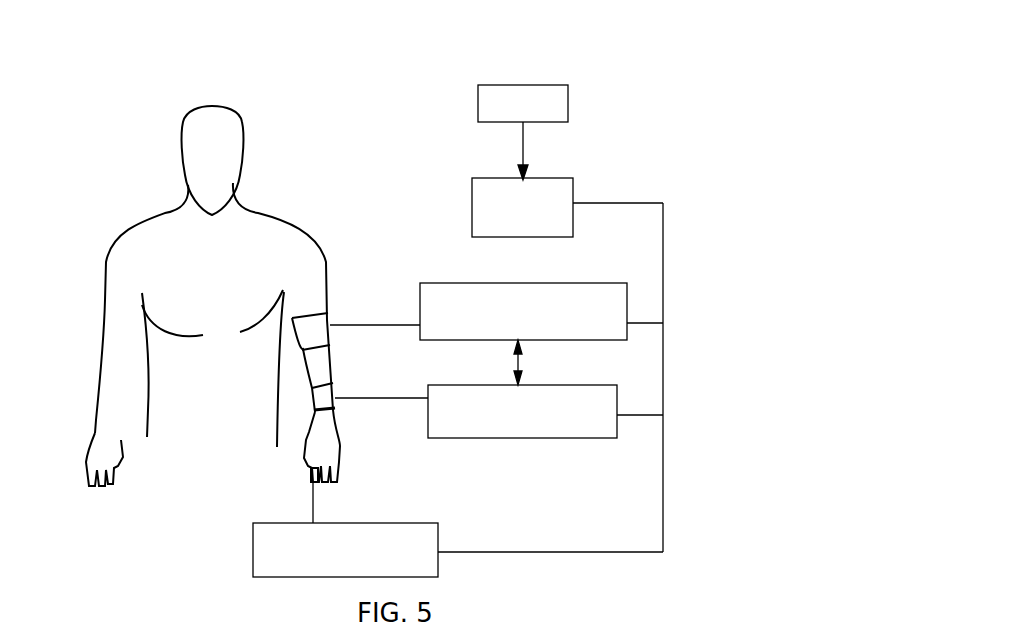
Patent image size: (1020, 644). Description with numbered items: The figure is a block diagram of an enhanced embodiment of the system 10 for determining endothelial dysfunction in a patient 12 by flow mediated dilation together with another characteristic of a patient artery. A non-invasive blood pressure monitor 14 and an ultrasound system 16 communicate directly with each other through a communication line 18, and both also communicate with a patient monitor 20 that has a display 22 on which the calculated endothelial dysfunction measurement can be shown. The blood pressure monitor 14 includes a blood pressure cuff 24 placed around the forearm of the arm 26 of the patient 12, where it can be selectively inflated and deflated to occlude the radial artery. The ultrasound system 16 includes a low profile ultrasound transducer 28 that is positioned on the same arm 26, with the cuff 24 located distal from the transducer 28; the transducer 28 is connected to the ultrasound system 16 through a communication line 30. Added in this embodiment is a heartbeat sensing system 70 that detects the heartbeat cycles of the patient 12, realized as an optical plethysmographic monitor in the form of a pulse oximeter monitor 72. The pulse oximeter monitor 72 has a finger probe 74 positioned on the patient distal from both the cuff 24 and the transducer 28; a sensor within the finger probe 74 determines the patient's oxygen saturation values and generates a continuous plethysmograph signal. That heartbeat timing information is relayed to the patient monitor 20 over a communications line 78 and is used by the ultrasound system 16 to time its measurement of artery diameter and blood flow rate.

The system 10 is at (398, 72).
The patient 12 is at (223, 118).
The blood pressure monitor 14 is at (560, 438).
The ultrasound system 16 is at (465, 283).
The communication line 18 is at (520, 365).
The patient monitor 20 is at (568, 178).
The display 22 is at (552, 85).
The blood pressure cuff 24 is at (335, 392).
The arm 26 is at (322, 271).
The ultrasound transducer 28 is at (330, 315).
The communication line 30 is at (387, 322).
The heartbeat sensing system 70 is at (477, 529).
The pulse oximeter monitor 72 is at (415, 523).
The finger probe 74 is at (310, 482).
The communications line 78 is at (662, 500).